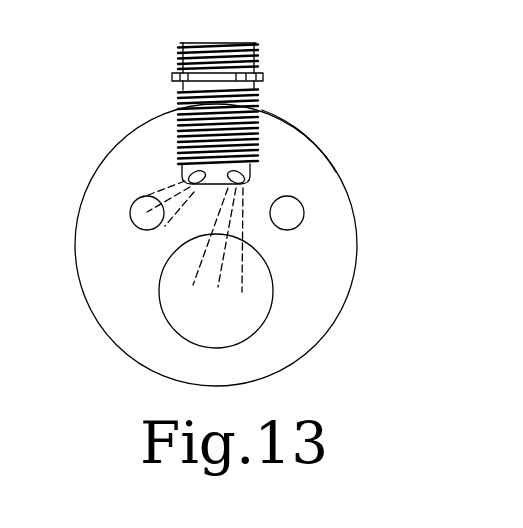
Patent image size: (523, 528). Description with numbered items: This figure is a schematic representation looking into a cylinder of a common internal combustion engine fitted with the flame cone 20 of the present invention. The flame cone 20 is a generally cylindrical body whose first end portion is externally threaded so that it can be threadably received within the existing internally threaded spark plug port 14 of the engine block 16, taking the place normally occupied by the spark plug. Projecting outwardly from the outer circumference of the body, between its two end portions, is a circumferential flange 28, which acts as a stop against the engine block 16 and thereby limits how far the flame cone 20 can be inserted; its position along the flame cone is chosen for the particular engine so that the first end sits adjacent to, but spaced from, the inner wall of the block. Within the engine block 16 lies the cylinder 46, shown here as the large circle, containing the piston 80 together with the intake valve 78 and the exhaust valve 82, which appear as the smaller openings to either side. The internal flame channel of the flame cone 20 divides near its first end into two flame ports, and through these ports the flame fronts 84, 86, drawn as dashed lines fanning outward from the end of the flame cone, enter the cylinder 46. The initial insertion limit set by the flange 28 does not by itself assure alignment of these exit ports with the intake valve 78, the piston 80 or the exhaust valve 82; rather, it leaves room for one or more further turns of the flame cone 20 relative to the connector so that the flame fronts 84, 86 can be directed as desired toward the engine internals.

The threaded spark plug port 14 is at (257, 104).
The engine block 16 is at (331, 165).
The flame cone 20 is at (157, 93).
The circumferential flange 28 is at (172, 77).
The cylinder 46 is at (288, 155).
The intake valve 78 is at (130, 213).
The piston 80 is at (242, 278).
The exhaust valve 82 is at (304, 216).
The flame front 84 is at (188, 182).
The flame front 86 is at (202, 258).